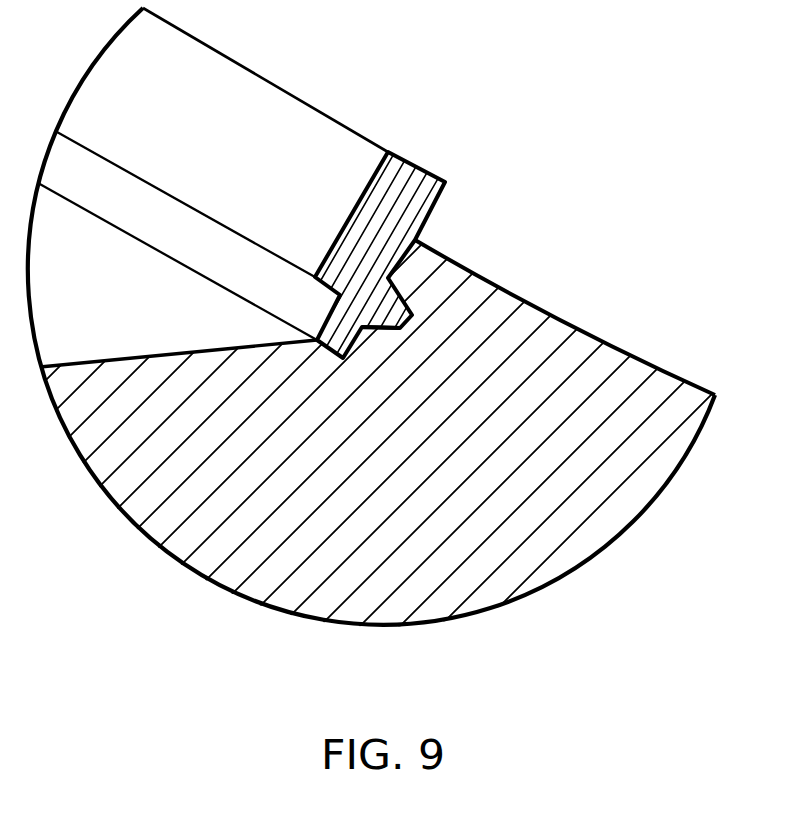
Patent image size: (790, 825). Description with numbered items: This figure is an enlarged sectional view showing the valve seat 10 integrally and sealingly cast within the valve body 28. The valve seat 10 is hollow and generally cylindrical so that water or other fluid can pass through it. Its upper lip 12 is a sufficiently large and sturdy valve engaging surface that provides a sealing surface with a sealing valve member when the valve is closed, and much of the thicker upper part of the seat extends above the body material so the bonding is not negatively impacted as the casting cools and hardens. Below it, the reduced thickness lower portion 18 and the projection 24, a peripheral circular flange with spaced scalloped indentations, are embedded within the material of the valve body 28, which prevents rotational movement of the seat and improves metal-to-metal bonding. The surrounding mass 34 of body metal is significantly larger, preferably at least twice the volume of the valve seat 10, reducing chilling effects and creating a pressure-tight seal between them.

The valve seat 10 is at (242, 100).
The upper lip 12 is at (415, 164).
The reduced thickness lower portion 18 is at (332, 352).
The projection 24 is at (391, 320).
The valve body 28 is at (588, 597).
The mass 34 is at (282, 484).